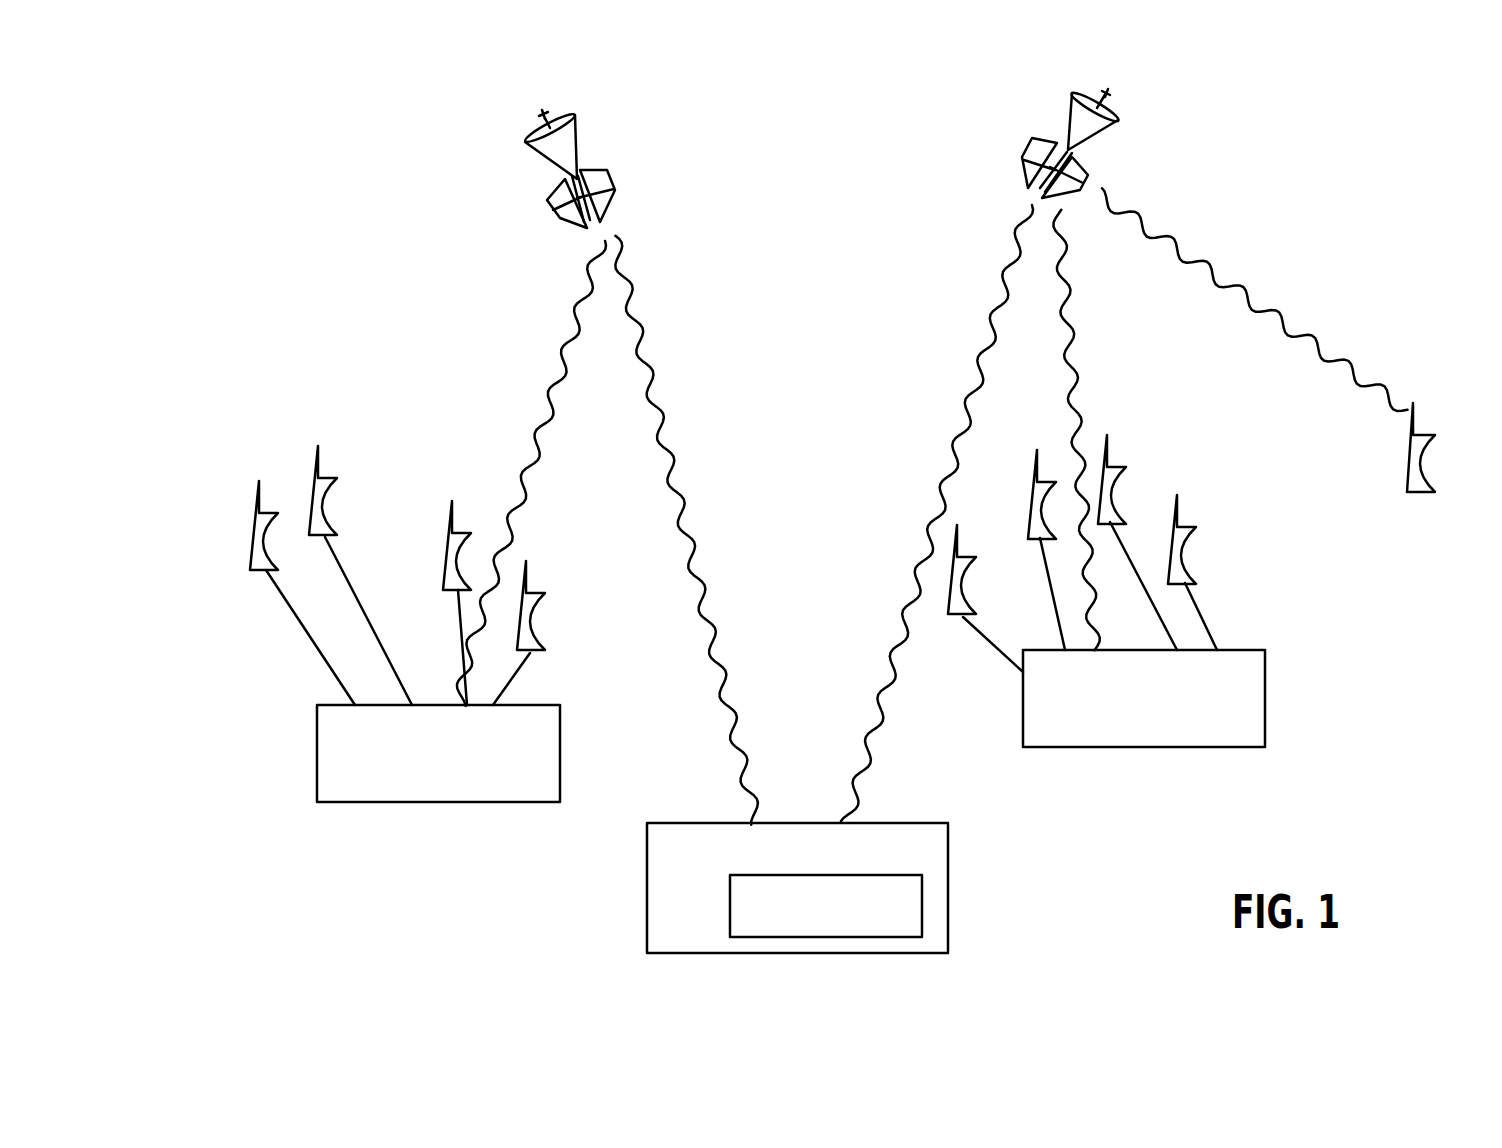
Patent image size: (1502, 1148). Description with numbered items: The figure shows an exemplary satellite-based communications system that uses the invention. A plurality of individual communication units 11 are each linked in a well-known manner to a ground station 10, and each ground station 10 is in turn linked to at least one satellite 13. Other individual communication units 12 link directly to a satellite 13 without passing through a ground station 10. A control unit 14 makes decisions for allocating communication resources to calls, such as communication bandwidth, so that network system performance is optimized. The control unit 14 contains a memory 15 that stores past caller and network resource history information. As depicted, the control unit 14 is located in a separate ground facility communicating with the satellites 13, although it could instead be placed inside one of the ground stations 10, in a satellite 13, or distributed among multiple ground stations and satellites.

The ground station 10 is at (382, 802).
The individual communication unit 11 is at (250, 537).
The individual communication unit 12 is at (1420, 462).
The satellite 13 is at (548, 200).
The control unit 14 is at (948, 843).
The memory 15 is at (922, 910).